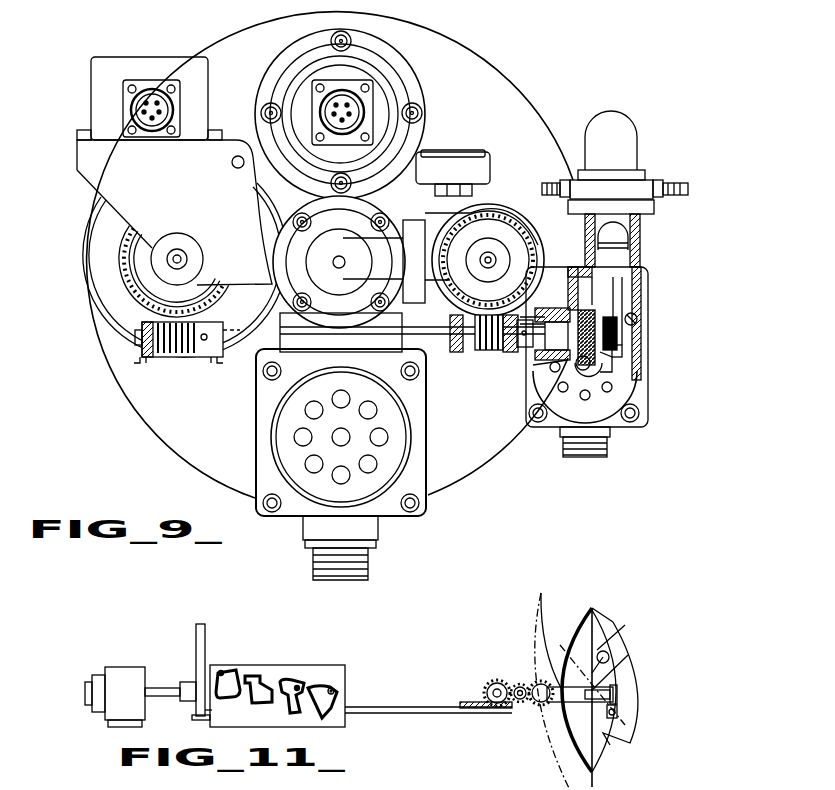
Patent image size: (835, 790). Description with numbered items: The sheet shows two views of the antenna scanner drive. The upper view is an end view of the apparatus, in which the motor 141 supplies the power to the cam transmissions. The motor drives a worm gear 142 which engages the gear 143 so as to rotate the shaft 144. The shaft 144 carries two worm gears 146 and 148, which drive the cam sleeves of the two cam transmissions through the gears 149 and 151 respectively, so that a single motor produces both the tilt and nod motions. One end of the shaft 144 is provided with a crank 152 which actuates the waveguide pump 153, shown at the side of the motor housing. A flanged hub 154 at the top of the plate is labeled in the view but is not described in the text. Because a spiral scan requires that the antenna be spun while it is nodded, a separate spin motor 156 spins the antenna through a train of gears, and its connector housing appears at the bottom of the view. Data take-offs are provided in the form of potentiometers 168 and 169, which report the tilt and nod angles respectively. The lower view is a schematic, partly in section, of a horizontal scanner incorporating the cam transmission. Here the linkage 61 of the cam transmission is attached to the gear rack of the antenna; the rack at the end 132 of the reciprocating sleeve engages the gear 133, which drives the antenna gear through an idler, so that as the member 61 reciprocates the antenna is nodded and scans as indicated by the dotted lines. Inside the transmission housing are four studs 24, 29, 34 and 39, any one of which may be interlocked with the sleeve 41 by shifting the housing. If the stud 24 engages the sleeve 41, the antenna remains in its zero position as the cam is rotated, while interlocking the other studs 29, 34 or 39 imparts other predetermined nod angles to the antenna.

In FIG. 9, the potentiometer 169 is at (140, 70).
In FIG. 9, the flanged hub connector 154 is at (353, 60).
In FIG. 9, the potentiometer 168 is at (462, 153).
In FIG. 9, the gear 151 is at (500, 207).
In FIG. 9, the waveguide pump 153 is at (632, 176).
In FIG. 9, the gear 143 is at (597, 310).
In FIG. 9, the crank 152 is at (603, 322).
In FIG. 9, the worm gear 142 is at (614, 367).
In FIG. 9, the motor 141 is at (623, 395).
In FIG. 9, the gear 149 is at (122, 297).
In FIG. 9, the worm gear 146 is at (182, 358).
In FIG. 9, the shaft 144 is at (438, 337).
In FIG. 9, the worm gear 148 is at (492, 350).
In FIG. 9, the spin motor 156 is at (392, 507).
In FIG. 11, the stud 24 is at (222, 670).
In FIG. 11, the stud 29 is at (256, 678).
In FIG. 11, the sleeve 41 is at (292, 673).
In FIG. 11, the stud 34 is at (298, 688).
In FIG. 11, the stud 39 is at (336, 689).
In FIG. 11, the linkage 61 is at (393, 708).
In FIG. 11, the gear 133 is at (487, 682).
In FIG. 11, the end of sleeve 132 is at (457, 704).